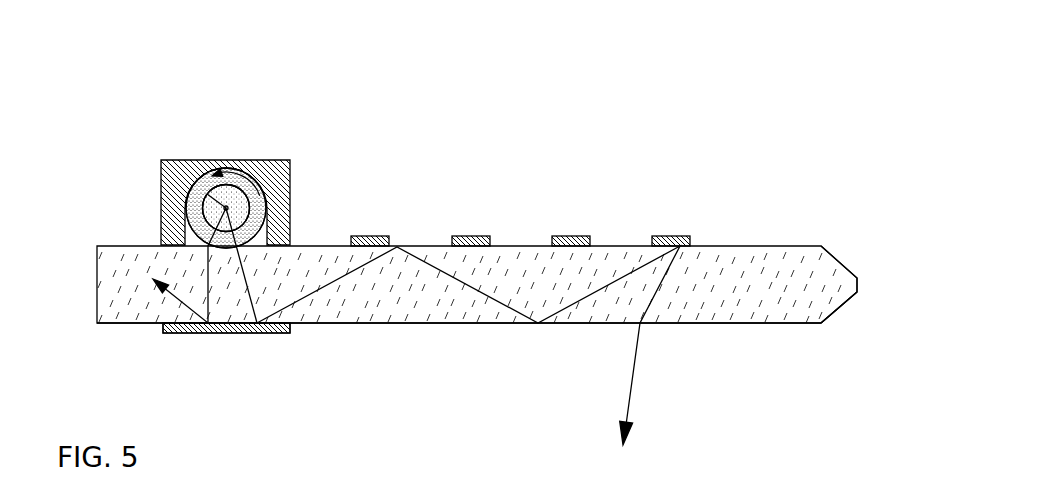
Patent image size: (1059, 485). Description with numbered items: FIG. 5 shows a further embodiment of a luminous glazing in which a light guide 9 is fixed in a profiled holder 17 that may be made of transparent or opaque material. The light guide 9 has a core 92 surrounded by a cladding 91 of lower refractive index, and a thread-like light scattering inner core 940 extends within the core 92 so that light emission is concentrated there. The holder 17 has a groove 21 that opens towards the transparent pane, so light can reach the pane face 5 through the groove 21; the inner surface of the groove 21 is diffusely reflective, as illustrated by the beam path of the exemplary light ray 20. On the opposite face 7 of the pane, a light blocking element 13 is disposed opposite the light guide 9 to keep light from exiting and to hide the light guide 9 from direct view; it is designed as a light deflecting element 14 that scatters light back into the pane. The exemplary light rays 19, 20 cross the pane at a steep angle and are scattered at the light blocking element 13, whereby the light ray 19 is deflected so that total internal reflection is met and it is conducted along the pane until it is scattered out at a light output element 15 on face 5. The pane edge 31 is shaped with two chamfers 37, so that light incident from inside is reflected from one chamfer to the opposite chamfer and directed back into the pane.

The face 5 is at (722, 246).
The face 7 is at (695, 323).
The light guide 9 is at (211, 175).
The cladding 91 is at (224, 169).
The core 92 is at (241, 188).
The inner core 940 is at (190, 205).
The light blocking element 13 is at (270, 333).
The light deflecting element 14 is at (226, 328).
The light output elements 15 is at (370, 237).
The profiled holder 17 is at (160, 158).
The light ray 19 is at (628, 398).
The light ray 20 is at (170, 300).
The groove 21 is at (264, 252).
The edge 31 is at (840, 236).
The chamfers 37 is at (843, 300).